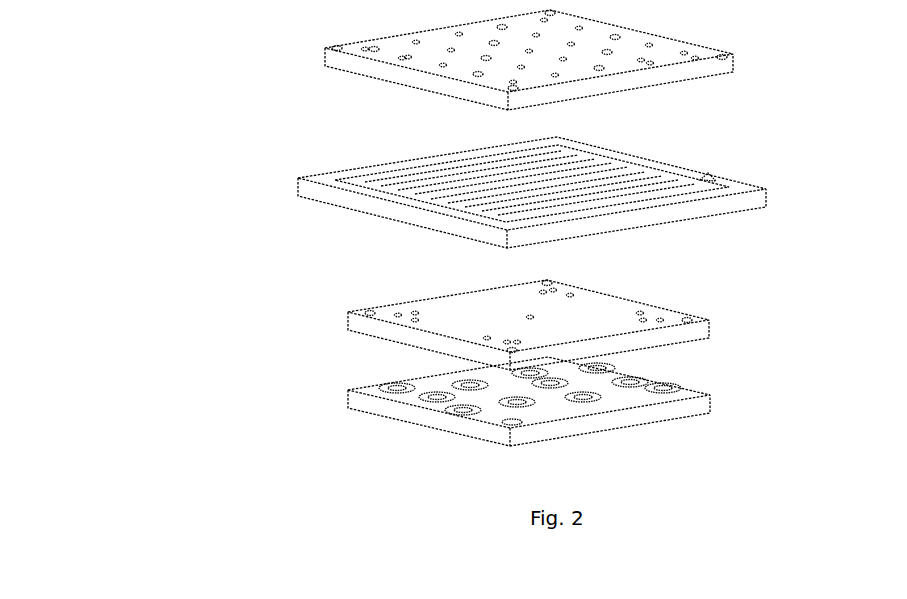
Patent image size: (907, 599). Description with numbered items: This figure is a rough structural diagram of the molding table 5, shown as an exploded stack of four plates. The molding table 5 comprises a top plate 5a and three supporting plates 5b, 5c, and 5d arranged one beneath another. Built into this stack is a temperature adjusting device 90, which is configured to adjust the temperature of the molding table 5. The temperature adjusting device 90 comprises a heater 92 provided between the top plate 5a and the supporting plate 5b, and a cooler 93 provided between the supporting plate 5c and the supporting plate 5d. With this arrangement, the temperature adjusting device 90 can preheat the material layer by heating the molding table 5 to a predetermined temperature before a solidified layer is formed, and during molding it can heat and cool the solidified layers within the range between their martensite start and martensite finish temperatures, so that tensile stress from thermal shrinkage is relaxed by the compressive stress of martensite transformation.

The molding table 5 is at (175, 57).
The top plate 5a is at (333, 57).
The supporting plate 5b is at (300, 184).
The supporting plate 5c is at (348, 320).
The supporting plate 5d is at (348, 396).
The temperature adjusting device 90 is at (793, 122).
The heater 92 is at (703, 178).
The cooler 93 is at (655, 385).